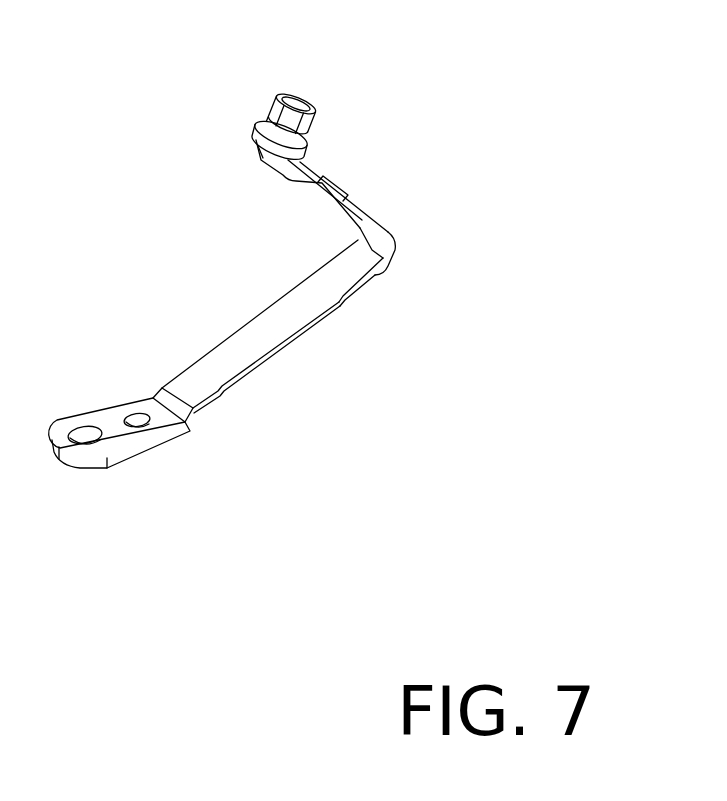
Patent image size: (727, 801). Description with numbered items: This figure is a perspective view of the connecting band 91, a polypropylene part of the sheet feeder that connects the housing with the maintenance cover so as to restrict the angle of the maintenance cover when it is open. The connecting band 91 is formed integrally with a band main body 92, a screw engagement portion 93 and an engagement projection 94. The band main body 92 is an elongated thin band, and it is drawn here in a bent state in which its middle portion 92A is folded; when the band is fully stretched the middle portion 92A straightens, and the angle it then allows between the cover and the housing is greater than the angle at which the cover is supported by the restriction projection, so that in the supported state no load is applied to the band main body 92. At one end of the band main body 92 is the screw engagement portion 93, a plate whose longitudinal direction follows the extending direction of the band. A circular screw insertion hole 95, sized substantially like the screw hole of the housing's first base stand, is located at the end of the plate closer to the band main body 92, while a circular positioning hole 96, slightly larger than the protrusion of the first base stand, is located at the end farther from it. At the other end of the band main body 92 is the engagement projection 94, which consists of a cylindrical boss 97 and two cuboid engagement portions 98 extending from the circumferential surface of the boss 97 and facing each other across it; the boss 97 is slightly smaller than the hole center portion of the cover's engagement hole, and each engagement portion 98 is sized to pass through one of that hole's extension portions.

The connecting band 91 is at (296, 298).
The band main body 92 is at (350, 281).
The middle portion 92A is at (367, 244).
The screw engagement portion 93 is at (118, 424).
The engagement projection 94 is at (315, 83).
The screw insertion hole 95 is at (134, 418).
The positioning hole 96 is at (82, 432).
The boss 97 is at (288, 97).
The engagement portions 98 is at (273, 99).